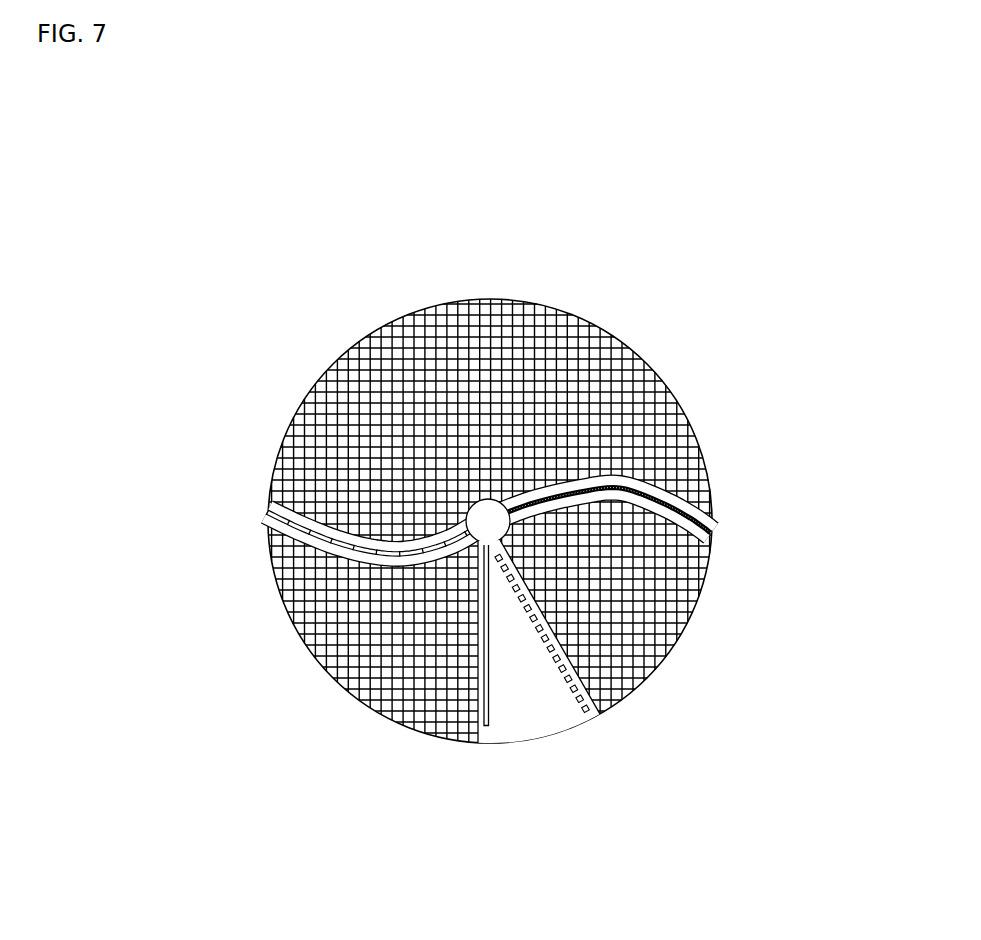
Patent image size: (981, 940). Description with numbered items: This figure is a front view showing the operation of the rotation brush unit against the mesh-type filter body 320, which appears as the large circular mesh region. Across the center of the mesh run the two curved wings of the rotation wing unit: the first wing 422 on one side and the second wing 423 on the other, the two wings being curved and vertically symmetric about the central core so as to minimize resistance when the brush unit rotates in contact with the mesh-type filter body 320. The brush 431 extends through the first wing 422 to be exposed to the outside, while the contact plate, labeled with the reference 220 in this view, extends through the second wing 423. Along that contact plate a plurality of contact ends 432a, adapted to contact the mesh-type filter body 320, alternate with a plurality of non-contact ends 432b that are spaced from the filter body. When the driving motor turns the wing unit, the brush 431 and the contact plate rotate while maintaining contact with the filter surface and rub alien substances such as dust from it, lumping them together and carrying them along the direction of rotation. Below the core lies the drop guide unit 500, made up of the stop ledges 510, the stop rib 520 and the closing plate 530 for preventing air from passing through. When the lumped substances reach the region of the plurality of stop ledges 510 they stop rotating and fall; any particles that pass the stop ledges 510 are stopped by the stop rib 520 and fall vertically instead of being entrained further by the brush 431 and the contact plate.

The mesh-type filter body 320 is at (500, 325).
The connecting band 220 is at (386, 434).
The contact ends 432a is at (285, 541).
The non-contact ends 432b is at (292, 551).
The brush 431 is at (625, 475).
The first wing 422 is at (687, 528).
The second wing 423 is at (352, 558).
The drop guide unit 500 is at (541, 727).
The stop ledges 510 is at (571, 692).
The stop rib 520 is at (487, 712).
The closing plate 530 is at (533, 712).